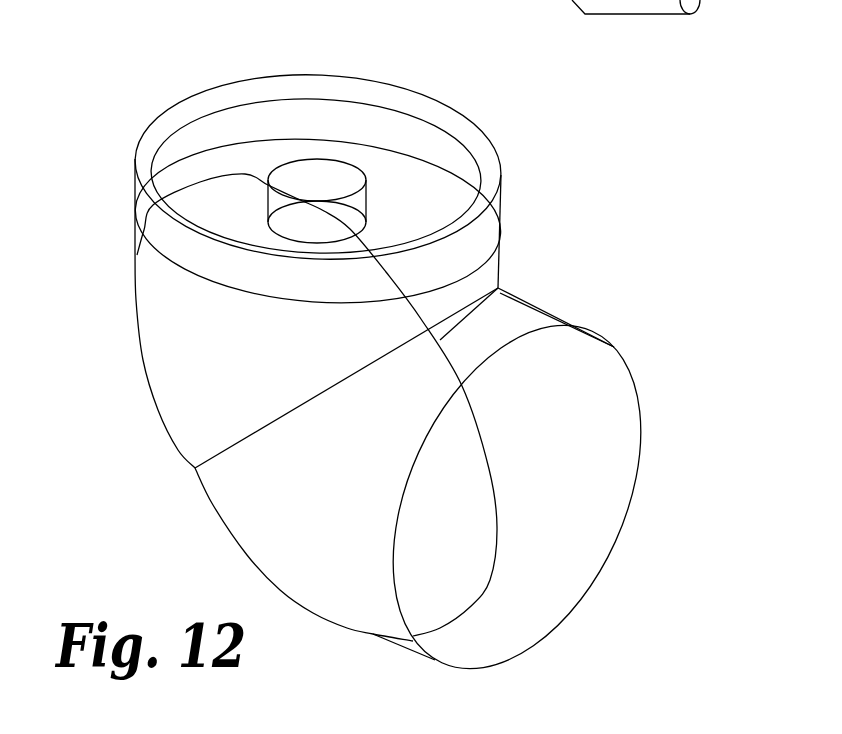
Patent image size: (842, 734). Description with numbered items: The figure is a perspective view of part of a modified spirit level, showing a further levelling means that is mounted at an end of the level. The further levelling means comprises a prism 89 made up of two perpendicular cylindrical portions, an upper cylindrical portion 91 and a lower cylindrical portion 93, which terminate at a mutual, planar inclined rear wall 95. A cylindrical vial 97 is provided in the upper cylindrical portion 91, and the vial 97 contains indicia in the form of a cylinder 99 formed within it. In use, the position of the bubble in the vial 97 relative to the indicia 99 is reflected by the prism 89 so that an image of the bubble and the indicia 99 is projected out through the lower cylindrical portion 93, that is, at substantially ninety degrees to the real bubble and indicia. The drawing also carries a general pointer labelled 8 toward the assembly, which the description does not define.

The elbow fitting 8 is at (590, 260).
The upper cylindrical portion 91 is at (227, 84).
The cylindrical vial 97 is at (465, 143).
The indicia 99 is at (368, 181).
The prism 89 is at (405, 404).
The planar inclined rear wall 95 is at (182, 452).
The lower cylindrical portion 93 is at (617, 547).